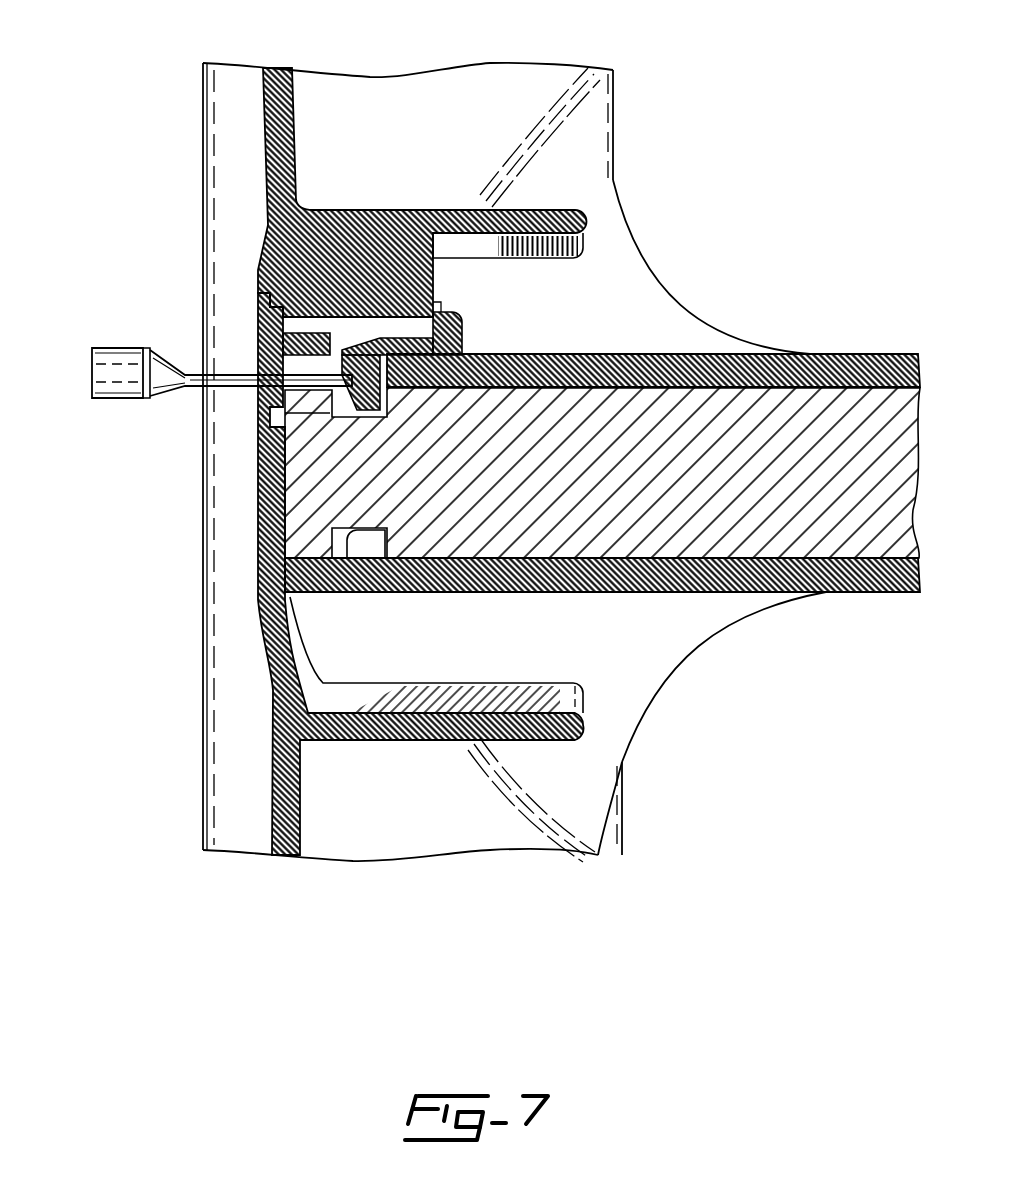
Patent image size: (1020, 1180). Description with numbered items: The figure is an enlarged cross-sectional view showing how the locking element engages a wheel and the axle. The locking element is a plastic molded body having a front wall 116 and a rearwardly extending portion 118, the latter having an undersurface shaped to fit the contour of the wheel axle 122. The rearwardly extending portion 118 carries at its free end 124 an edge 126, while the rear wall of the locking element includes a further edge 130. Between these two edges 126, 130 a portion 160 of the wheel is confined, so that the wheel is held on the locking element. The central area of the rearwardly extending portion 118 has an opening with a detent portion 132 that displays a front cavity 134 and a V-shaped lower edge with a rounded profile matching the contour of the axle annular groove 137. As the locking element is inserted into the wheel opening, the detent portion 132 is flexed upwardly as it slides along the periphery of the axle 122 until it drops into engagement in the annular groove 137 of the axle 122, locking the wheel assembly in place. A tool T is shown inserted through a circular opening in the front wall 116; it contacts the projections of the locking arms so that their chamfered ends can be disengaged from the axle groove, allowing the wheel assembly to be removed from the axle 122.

The front wall 116 is at (258, 312).
The rearwardly extending portion 118 is at (314, 332).
The wheel axle 122 is at (793, 433).
The free end 124 is at (464, 340).
The edge 126 is at (438, 306).
The edge 130 is at (265, 272).
The detent portion 132 is at (378, 336).
The front cavity 134 is at (344, 388).
The axle annular groove 137 is at (330, 411).
The portion of the wheel 160 is at (548, 355).
The tool T is at (86, 373).